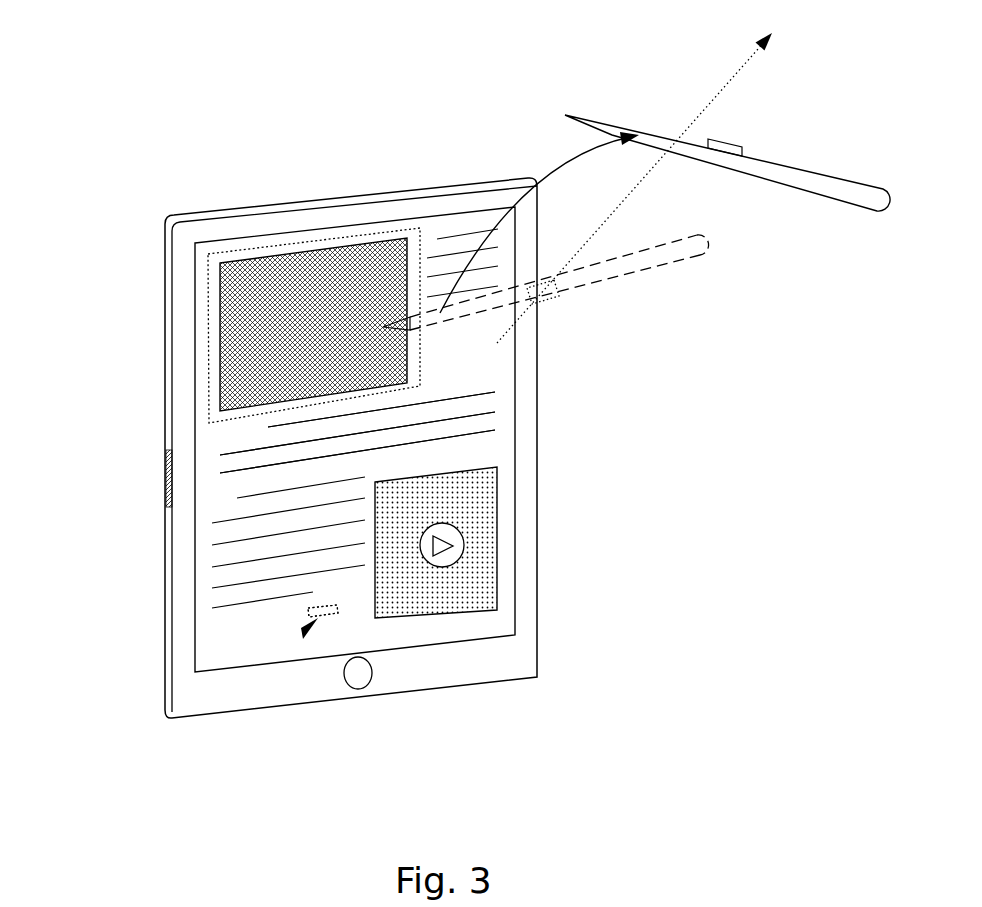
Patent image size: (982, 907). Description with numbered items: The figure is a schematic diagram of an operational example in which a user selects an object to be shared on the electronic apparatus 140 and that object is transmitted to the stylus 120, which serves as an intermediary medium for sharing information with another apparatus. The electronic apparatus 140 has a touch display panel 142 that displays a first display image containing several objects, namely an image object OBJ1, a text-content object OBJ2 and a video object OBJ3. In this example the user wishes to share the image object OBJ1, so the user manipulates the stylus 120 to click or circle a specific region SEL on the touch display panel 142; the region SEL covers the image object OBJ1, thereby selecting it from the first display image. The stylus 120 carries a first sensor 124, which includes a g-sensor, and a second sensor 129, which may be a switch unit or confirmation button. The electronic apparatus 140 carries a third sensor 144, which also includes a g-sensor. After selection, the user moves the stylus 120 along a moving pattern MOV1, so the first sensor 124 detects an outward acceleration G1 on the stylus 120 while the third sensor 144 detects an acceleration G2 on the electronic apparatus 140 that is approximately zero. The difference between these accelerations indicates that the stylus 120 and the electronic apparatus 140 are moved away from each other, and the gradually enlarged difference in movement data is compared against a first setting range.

The stylus 120 is at (805, 167).
The first sensor 124 is at (557, 283).
The second sensor 129 is at (725, 138).
The electronic apparatus 140 is at (190, 215).
The touch display panel 142 is at (193, 390).
The third sensor 144 is at (337, 610).
The moving pattern MOV1 is at (572, 168).
The acceleration G1 is at (634, 188).
The acceleration G2 is at (301, 625).
The specific region SEL is at (207, 280).
The image object OBJ1 is at (218, 325).
The text-content object OBJ2 is at (515, 423).
The video object OBJ3 is at (497, 525).